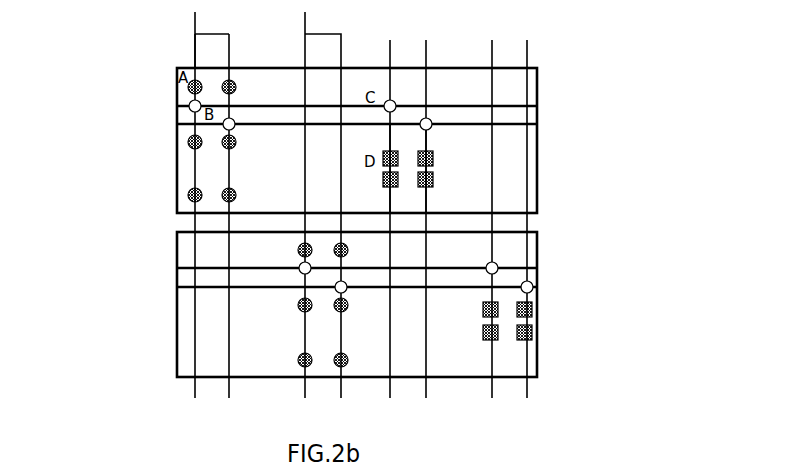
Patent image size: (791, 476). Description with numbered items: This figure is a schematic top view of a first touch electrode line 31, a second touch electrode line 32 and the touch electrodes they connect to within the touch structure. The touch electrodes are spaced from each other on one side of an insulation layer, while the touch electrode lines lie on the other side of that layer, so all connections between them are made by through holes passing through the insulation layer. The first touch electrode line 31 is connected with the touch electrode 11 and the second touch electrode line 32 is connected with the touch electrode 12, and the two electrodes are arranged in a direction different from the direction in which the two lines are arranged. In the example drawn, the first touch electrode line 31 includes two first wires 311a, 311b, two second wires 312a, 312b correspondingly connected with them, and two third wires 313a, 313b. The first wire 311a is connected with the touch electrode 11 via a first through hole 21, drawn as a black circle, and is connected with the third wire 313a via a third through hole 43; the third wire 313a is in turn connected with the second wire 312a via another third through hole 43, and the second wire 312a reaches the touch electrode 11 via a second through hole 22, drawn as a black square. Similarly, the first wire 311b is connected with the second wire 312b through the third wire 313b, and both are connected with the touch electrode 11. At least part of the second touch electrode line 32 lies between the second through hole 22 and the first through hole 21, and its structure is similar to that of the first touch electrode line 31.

The touch electrode 11 is at (537, 79).
The touch electrode 12 is at (537, 332).
The first through hole 21 is at (200, 84).
The second through hole 22 is at (400, 150).
The first touch electrode line 31 is at (72, 232).
The second touch electrode line 32 is at (321, 199).
The third through hole 43 is at (200, 98).
The first wire 311a is at (195, 57).
The first wire 311b is at (195, 37).
The second wire 312a is at (390, 133).
The second wire 312b is at (430, 200).
The third wire 313a is at (177, 106).
The third wire 313b is at (183, 128).